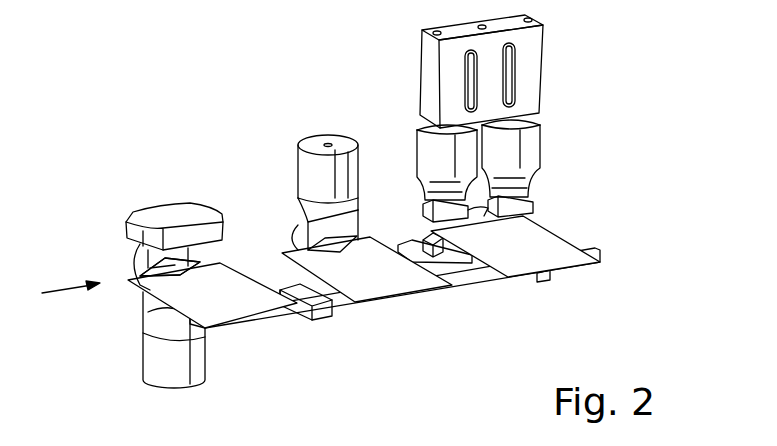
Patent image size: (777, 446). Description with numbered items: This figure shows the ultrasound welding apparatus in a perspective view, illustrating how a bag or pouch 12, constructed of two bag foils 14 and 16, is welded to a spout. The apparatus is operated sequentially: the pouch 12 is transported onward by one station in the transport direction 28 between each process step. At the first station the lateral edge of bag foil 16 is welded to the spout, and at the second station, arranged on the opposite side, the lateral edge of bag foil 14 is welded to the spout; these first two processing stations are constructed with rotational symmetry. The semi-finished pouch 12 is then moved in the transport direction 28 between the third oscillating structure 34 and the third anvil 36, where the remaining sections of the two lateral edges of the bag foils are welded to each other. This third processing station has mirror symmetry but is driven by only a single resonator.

The bag or pouch 12 is at (250, 278).
The bag foil 14 is at (226, 292).
The bag foil 16 is at (230, 325).
The transport direction 28 is at (53, 292).
The third oscillating structure 34 is at (527, 63).
The third anvil 36 is at (468, 275).